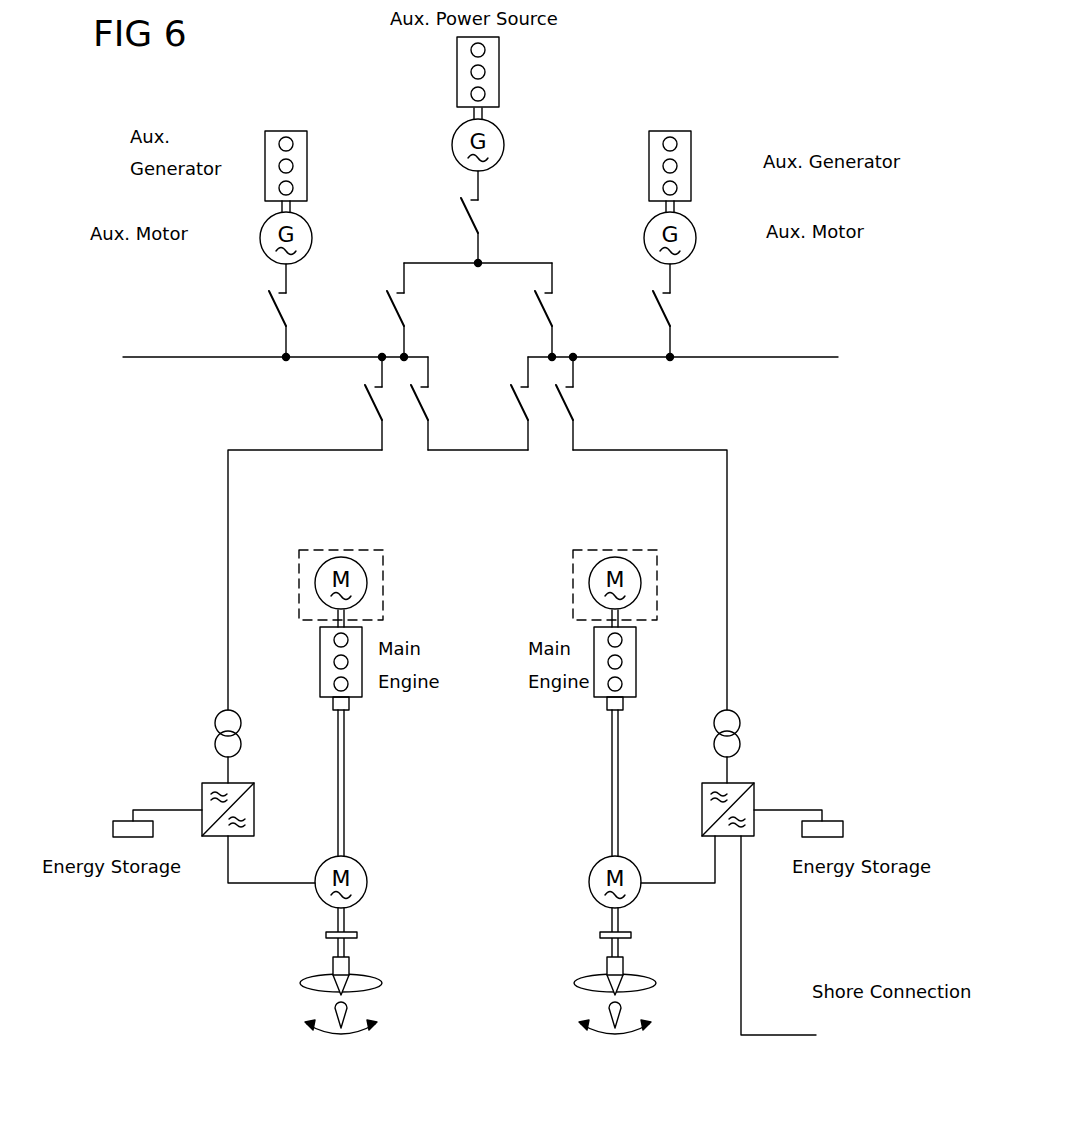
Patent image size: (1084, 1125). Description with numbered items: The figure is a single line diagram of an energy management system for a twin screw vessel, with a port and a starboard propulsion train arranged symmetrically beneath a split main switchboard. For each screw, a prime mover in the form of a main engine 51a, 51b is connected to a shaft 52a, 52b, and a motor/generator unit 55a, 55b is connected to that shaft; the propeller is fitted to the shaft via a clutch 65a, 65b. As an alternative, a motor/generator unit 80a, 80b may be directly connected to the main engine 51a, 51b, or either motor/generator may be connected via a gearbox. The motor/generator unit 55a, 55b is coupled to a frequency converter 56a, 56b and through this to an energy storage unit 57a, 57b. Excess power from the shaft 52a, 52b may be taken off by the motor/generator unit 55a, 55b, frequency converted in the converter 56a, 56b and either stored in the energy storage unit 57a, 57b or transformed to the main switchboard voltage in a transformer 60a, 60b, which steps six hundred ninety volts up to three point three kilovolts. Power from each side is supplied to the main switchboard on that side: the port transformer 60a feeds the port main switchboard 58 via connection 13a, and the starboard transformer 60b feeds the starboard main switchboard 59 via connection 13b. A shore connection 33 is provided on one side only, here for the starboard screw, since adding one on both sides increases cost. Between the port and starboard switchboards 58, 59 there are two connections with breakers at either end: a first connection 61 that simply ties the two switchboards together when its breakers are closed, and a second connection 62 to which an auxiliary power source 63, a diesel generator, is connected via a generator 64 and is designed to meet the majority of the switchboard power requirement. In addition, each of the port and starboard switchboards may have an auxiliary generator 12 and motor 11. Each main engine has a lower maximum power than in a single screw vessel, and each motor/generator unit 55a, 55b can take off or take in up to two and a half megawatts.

The motor 11 is at (260, 238).
The auxiliary generator 12 is at (264, 165).
The connection 13a is at (228, 580).
The connection 13b is at (727, 580).
The shore connection 33 is at (778, 1033).
The main engine 51a is at (320, 660).
The main engine 51b is at (637, 660).
The shaft 52a is at (347, 783).
The shaft 52b is at (610, 783).
The motor/generator unit 55a is at (367, 882).
The motor/generator unit 55b is at (589, 882).
The frequency converter 56a is at (258, 809).
The frequency converter 56b is at (702, 809).
The energy storage unit 57a is at (120, 818).
The energy storage unit 57b is at (830, 818).
The port main switchboard 58 is at (200, 356).
The starboard main switchboard 59 is at (762, 356).
The transformer 60a is at (215, 728).
The transformer 60b is at (740, 728).
The first connection 61 is at (479, 450).
The second connection 62 is at (430, 262).
The auxiliary power source 63 is at (457, 70).
The generator 64 is at (452, 145).
The clutch 65a is at (326, 936).
The clutch 65b is at (598, 936).
The motor/generator unit 80a is at (330, 550).
The motor/generator unit 80b is at (604, 550).